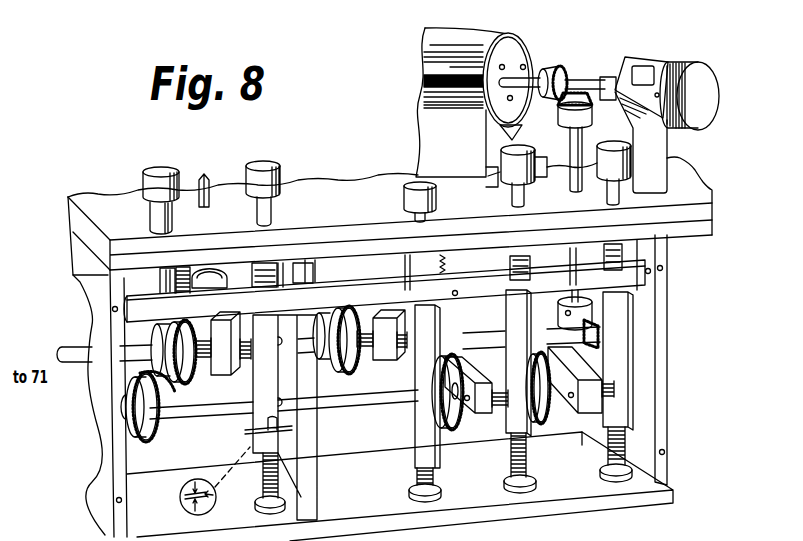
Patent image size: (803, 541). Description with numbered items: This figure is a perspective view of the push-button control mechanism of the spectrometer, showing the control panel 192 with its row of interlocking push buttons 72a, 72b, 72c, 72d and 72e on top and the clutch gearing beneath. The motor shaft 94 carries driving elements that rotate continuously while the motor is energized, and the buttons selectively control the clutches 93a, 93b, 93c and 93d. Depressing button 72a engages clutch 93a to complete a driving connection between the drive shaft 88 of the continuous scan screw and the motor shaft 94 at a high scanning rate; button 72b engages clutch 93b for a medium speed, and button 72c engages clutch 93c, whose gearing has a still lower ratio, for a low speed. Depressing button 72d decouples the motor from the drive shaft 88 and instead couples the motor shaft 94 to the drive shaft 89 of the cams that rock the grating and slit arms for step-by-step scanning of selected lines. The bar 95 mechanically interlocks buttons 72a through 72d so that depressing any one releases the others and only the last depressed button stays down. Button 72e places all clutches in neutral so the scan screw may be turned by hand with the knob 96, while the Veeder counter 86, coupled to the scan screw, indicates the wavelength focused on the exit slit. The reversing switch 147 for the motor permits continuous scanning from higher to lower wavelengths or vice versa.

The Veeder counter 86 is at (640, 60).
The knob 96 is at (712, 85).
The drive shaft 88 is at (569, 140).
The push button 72a is at (404, 198).
The push button 72b is at (510, 170).
The push button 72c is at (602, 167).
The push button 72d is at (280, 170).
The push button 72e is at (147, 180).
The drive shaft 89 is at (208, 176).
The bar 95 is at (363, 295).
The control panel 192 is at (719, 282).
The motor shaft 94 is at (82, 362).
The clutch 93a is at (334, 372).
The clutch 93b is at (444, 428).
The clutch 93c is at (537, 417).
The clutch 93d is at (186, 367).
The reversing switch 147 is at (180, 498).